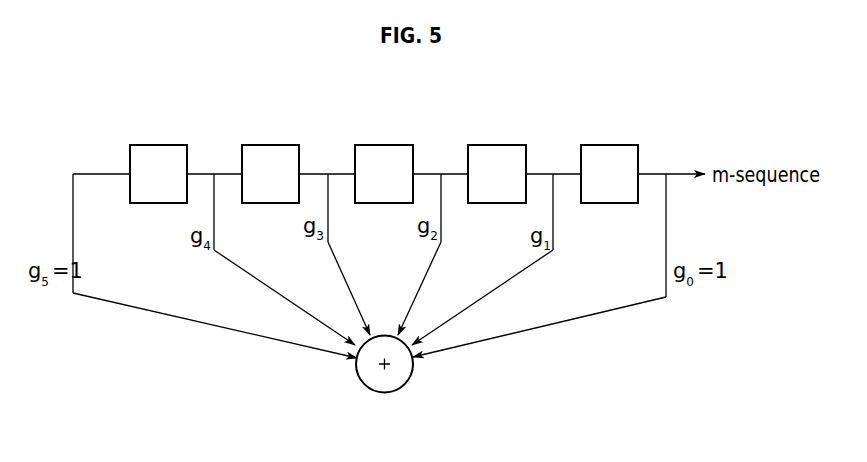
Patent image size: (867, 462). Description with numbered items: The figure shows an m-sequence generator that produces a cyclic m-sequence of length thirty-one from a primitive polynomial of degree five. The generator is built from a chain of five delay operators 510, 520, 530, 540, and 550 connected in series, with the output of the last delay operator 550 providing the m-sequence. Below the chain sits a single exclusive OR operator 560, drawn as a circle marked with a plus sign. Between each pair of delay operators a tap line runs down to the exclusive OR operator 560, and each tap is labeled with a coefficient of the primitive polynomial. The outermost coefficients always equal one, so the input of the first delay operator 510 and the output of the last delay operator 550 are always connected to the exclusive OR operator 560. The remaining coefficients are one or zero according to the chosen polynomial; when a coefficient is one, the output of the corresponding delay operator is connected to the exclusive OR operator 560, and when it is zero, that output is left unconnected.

The delay operator 510 is at (156, 145).
The delay operator 520 is at (269, 145).
The delay operator 530 is at (382, 145).
The delay operator 540 is at (496, 145).
The delay operator 550 is at (609, 145).
The exclusive OR operator 560 is at (402, 387).